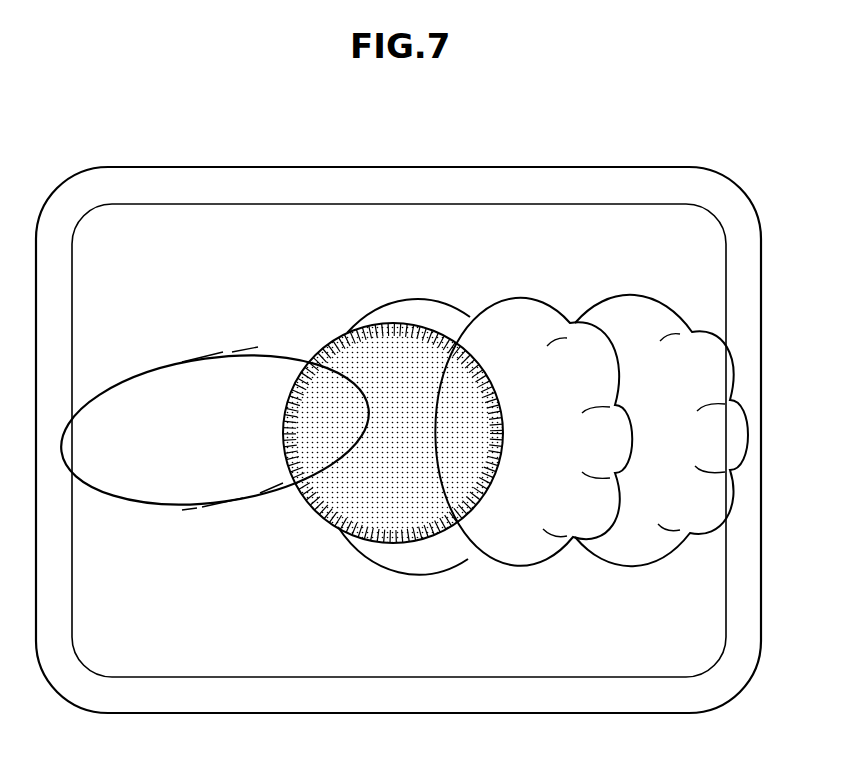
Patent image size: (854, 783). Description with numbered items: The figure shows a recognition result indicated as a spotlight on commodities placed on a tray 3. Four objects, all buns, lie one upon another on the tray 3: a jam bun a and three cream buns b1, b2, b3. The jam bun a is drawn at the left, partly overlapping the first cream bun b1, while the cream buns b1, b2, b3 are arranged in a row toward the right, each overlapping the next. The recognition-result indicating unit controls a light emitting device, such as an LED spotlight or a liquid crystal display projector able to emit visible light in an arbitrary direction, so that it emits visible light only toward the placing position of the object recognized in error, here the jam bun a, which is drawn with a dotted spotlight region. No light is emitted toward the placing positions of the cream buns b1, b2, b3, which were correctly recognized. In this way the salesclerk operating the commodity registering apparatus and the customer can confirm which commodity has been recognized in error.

The tray 3 is at (483, 167).
The jam bun a is at (199, 352).
The cream bun b1 is at (411, 300).
The cream bun b2 is at (520, 302).
The cream bun b3 is at (634, 296).